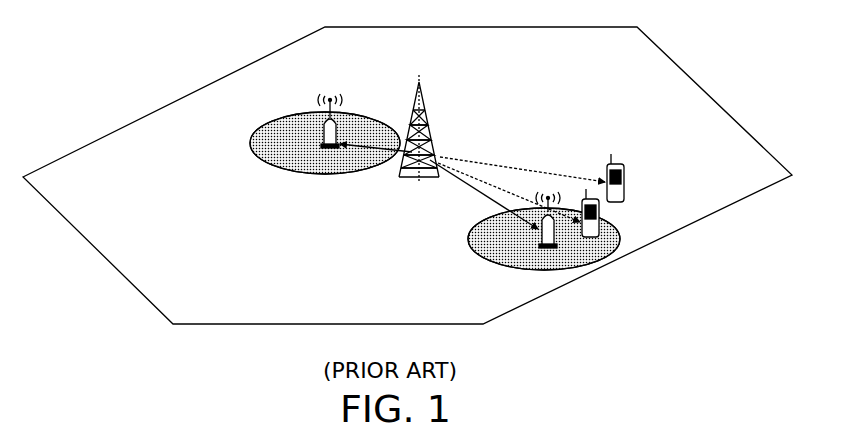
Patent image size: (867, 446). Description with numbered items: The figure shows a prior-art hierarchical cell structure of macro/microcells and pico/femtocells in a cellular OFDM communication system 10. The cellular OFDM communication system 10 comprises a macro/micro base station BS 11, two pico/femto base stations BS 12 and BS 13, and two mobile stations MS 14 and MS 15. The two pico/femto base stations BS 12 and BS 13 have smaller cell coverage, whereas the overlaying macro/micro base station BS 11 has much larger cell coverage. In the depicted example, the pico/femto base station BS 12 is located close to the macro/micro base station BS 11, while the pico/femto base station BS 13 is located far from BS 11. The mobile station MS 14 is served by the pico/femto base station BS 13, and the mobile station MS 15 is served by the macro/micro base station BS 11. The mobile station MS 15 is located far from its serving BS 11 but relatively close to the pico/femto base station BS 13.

The cellular OFDM communication system 10 is at (157, 24).
The macro/micro base station 11 is at (417, 145).
The pico/femto base station 12 is at (325, 134).
The pico/femto base station 13 is at (544, 231).
The mobile station 14 is at (610, 213).
The mobile station 15 is at (635, 178).